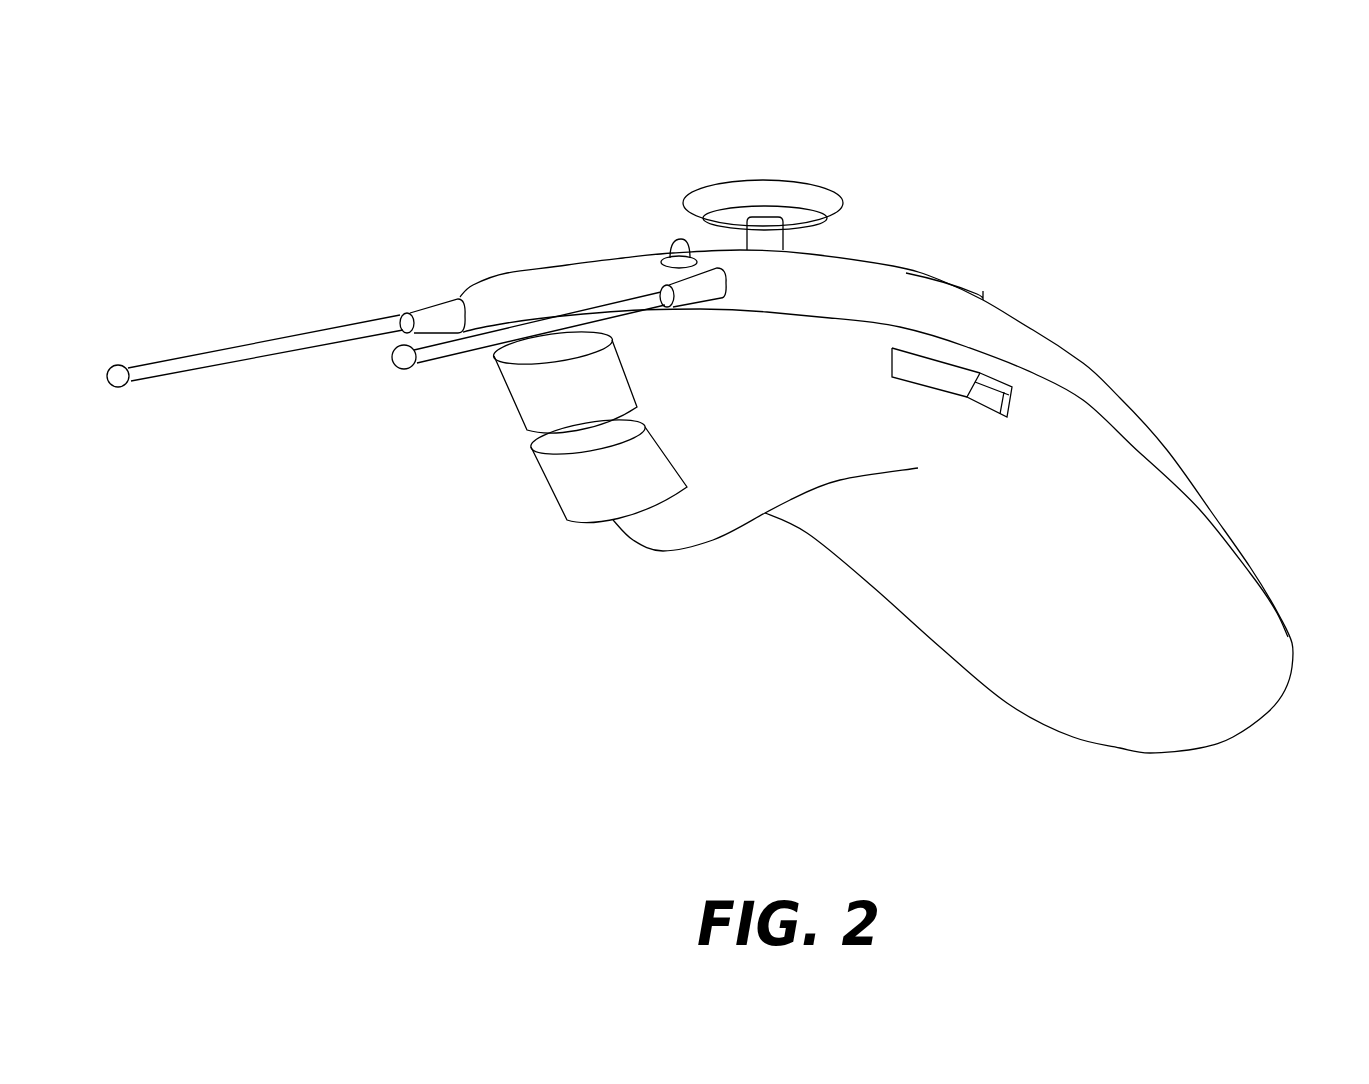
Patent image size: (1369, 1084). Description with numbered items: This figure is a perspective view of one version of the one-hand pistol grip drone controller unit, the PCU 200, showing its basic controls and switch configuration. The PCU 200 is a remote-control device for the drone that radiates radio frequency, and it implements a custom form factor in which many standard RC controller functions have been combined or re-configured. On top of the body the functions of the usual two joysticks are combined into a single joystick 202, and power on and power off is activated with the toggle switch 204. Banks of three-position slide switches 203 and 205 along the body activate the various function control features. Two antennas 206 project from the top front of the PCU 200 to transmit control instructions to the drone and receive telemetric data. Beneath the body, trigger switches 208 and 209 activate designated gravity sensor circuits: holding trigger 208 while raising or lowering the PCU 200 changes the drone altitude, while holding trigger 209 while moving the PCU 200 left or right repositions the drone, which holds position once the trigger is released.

The pistol grip drone controller unit (PCU) 200 is at (656, 108).
The joystick 202 is at (787, 180).
The three-position slide switch bank 203 is at (957, 272).
The toggle switch 204 is at (675, 241).
The three-position slide switch bank 205 is at (1015, 404).
The antennas 206 is at (265, 343).
The trigger switch 208 is at (500, 387).
The trigger switch 209 is at (553, 483).